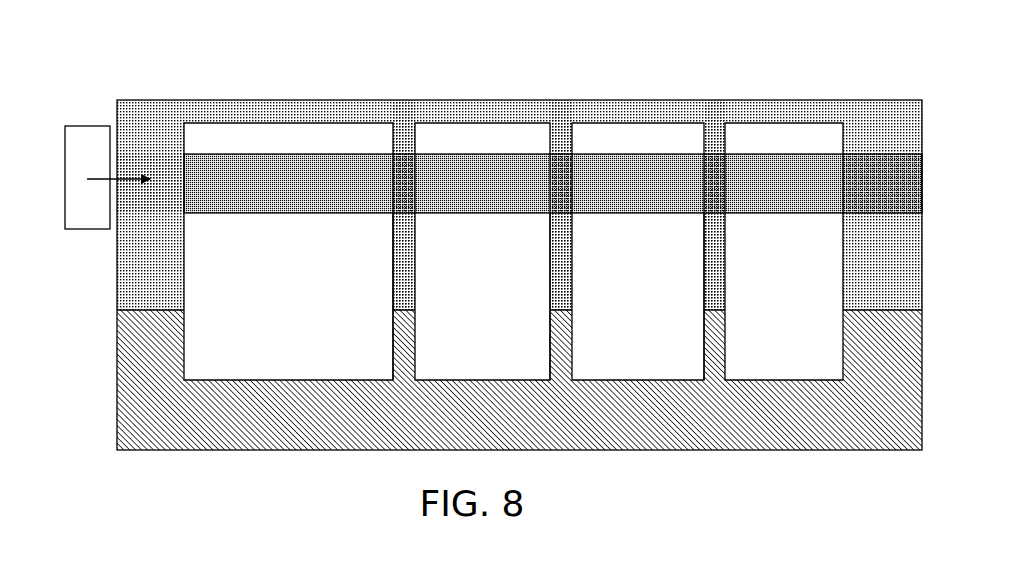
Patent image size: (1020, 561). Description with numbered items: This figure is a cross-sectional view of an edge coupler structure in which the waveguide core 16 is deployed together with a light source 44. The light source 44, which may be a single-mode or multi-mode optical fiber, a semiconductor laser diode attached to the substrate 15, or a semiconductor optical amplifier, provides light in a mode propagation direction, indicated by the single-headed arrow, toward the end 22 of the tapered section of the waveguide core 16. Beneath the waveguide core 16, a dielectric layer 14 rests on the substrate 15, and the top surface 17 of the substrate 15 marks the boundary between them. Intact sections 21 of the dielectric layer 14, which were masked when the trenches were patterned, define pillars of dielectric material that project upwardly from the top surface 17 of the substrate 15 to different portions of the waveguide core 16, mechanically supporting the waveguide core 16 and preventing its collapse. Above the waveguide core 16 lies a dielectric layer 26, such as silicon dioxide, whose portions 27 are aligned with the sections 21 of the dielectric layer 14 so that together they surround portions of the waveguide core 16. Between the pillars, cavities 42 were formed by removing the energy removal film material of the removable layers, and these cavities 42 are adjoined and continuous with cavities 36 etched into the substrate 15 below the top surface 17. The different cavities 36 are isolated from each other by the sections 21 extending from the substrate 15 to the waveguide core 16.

The dielectric layer 14 is at (160, 268).
The substrate 15 is at (157, 378).
The waveguide core 16 is at (800, 168).
The top surface 17 is at (150, 309).
The intact sections 21 is at (398, 245).
The end 22 is at (184, 173).
The dielectric layer 26 is at (158, 121).
The portions 27 is at (407, 135).
The cavities 36 is at (267, 349).
The cavities 42 is at (267, 263).
The light source 44 is at (73, 220).